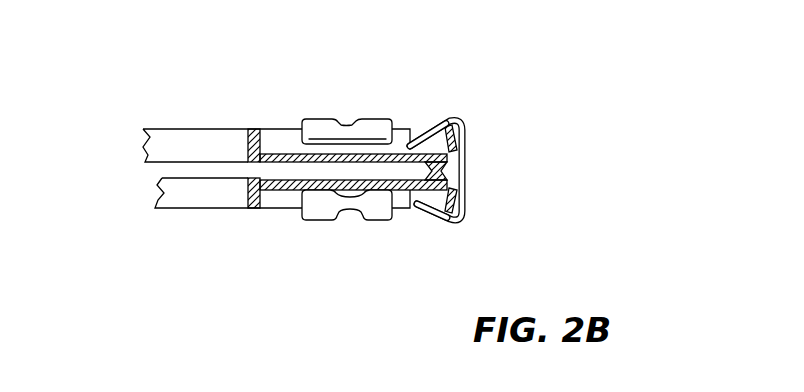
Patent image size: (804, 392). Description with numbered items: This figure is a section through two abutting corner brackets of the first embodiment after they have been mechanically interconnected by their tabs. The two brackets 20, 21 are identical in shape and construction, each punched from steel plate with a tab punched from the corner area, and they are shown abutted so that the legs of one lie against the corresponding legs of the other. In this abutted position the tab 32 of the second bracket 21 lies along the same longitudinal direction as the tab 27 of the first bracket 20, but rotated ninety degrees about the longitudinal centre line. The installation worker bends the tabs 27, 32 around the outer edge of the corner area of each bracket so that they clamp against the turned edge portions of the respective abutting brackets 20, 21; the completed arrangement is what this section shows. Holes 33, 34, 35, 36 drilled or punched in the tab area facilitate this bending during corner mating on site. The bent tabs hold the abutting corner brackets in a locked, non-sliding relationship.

The bracket 20 is at (172, 217).
The bracket 21 is at (188, 118).
The tab 27 is at (320, 216).
The tab 32 is at (465, 192).
The hole 33 is at (347, 120).
The hole 34 is at (350, 222).
The hole 35 is at (462, 120).
The hole 36 is at (457, 224).